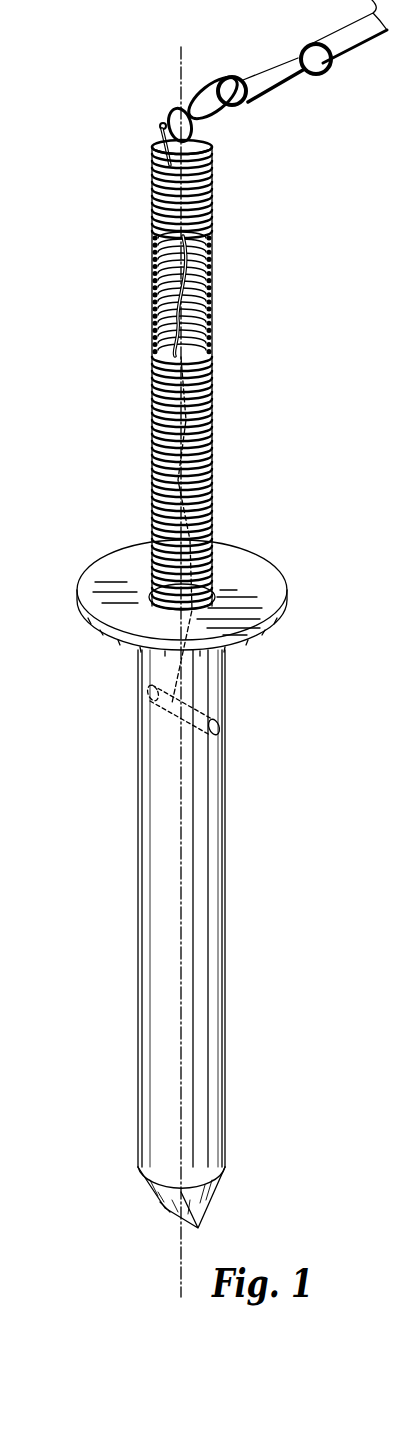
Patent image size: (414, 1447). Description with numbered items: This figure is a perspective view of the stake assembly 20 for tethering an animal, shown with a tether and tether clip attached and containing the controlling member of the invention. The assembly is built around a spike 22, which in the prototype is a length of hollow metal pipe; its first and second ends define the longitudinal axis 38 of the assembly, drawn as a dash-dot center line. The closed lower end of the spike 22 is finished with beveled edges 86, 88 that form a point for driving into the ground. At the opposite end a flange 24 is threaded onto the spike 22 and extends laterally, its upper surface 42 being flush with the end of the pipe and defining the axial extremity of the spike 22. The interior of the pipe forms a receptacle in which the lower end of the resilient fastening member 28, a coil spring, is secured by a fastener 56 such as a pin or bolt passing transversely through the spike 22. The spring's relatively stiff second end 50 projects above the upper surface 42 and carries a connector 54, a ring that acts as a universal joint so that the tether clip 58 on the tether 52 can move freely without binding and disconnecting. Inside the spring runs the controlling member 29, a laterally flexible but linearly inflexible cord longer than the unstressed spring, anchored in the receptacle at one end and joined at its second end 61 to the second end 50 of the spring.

The stake assembly 20 is at (218, 704).
The spike 22 is at (218, 959).
The flange 24 is at (202, 553).
The resilient fastening member 28 is at (207, 337).
The controlling member 29 is at (207, 153).
The longitudinal axis 38 is at (178, 62).
The upper surface 42 is at (112, 567).
The second end 50 is at (162, 115).
The tether 52 is at (358, 33).
The connector 54 is at (198, 83).
The fastener 56 is at (220, 728).
The tether clip 58 is at (262, 80).
The second end 61 is at (157, 132).
The beveled edge 86 is at (210, 1210).
The beveled edge 88 is at (170, 1210).